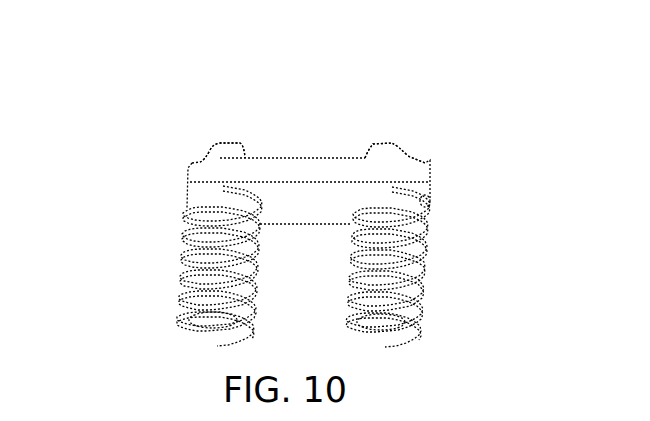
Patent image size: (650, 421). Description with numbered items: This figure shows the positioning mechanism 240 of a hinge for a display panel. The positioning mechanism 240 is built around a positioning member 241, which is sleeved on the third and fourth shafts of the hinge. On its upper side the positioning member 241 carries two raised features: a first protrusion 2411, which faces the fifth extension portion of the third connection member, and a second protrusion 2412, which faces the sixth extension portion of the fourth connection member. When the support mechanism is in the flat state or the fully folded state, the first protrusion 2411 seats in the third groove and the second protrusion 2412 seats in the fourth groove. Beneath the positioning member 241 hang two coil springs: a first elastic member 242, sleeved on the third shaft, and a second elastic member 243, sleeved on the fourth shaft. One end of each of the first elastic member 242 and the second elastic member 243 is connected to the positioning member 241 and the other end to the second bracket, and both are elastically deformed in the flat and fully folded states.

The positioning mechanism 240 is at (150, 52).
The positioning member 241 is at (194, 182).
The first protrusion 2411 is at (197, 146).
The second protrusion 2412 is at (420, 146).
The first elastic member 242 is at (180, 297).
The second elastic member 243 is at (422, 285).